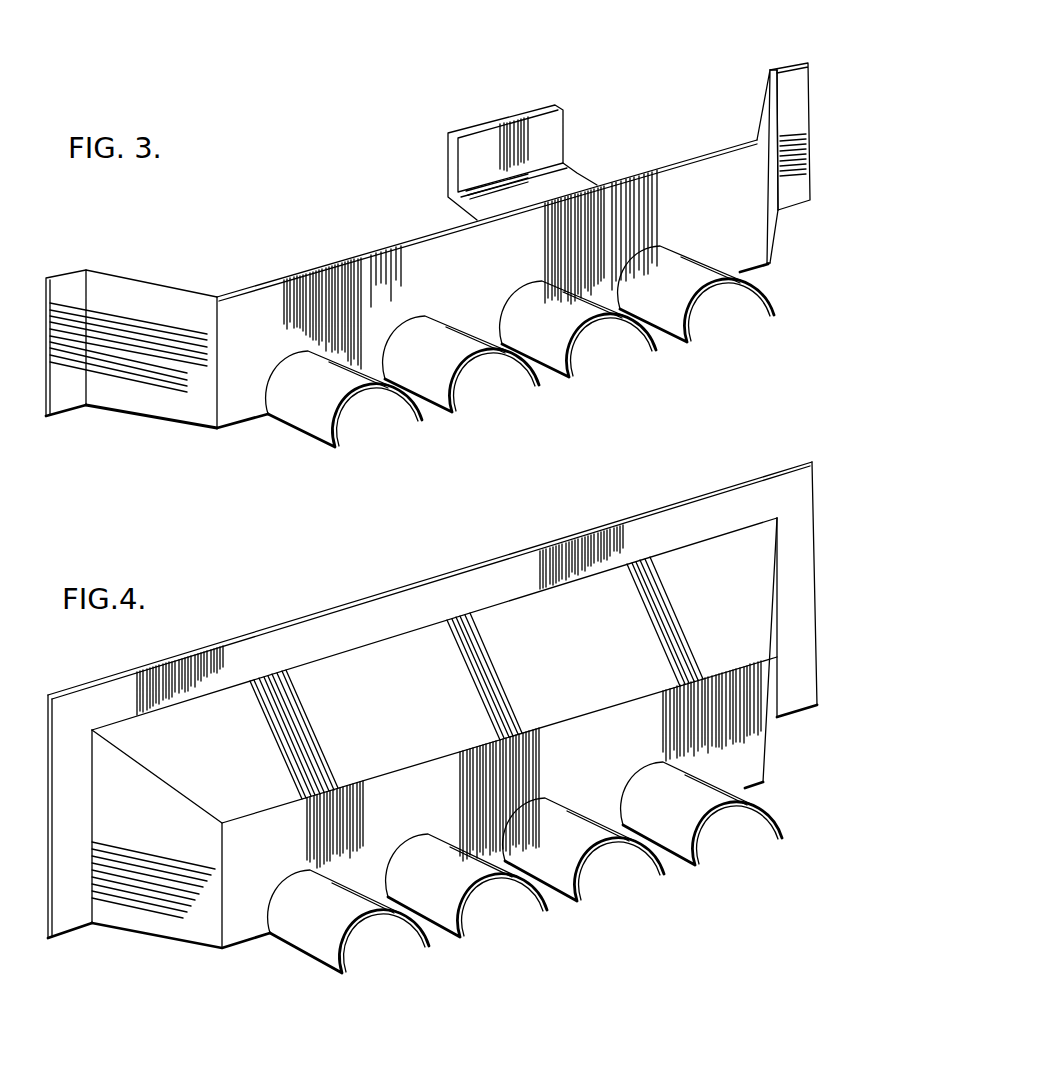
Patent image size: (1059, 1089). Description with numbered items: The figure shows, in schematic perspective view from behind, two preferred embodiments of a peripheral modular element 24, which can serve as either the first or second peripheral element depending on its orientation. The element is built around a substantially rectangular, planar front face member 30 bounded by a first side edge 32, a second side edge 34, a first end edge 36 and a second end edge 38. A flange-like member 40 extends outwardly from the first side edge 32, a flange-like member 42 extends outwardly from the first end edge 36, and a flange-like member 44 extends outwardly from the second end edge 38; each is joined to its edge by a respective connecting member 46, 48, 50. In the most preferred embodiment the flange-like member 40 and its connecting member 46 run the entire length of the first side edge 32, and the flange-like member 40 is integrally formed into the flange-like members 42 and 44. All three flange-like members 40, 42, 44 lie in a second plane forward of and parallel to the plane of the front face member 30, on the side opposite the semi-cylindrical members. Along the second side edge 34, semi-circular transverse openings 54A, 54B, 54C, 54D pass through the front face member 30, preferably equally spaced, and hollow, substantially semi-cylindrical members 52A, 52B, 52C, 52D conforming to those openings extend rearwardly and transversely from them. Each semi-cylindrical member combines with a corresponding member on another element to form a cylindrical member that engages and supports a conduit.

In FIG. 3, the peripheral modular element 24 is at (465, 276).
In FIG. 4, the peripheral modular element 24 is at (460, 762).
In FIG. 3, the front face member 30 is at (460, 303).
In FIG. 4, the front face member 30 is at (292, 830).
In FIG. 3, the first side edge 32 is at (346, 254).
In FIG. 4, the first side edge 32 is at (560, 717).
In FIG. 3, the second side edge 34 is at (245, 430).
In FIG. 3, the first end edge 36 is at (211, 368).
In FIG. 3, the second end edge 38 is at (777, 197).
In FIG. 3, the flange-like member 40 is at (542, 140).
In FIG. 4, the flange-like member 40 is at (508, 588).
In FIG. 3, the flange-like member 42 is at (65, 380).
In FIG. 4, the flange-like member 42 is at (66, 893).
In FIG. 3, the flange-like member 44 is at (793, 130).
In FIG. 4, the flange-like member 44 is at (794, 678).
In FIG. 3, the connecting member 46 is at (577, 173).
In FIG. 3, the connecting member 48 is at (137, 305).
In FIG. 4, the connecting member 48 is at (415, 690).
In FIG. 3, the connecting member 50 is at (779, 108).
In FIG. 3, the semi-cylindrical member 52A is at (747, 317).
In FIG. 3, the semi-cylindrical member 52B is at (623, 352).
In FIG. 3, the semi-cylindrical member 52C is at (484, 391).
In FIG. 3, the semi-cylindrical member 52D is at (357, 432).
In FIG. 3, the transverse opening 54A is at (719, 314).
In FIG. 3, the transverse opening 54B is at (596, 345).
In FIG. 3, the transverse opening 54C is at (476, 381).
In FIG. 3, the transverse opening 54D is at (361, 421).